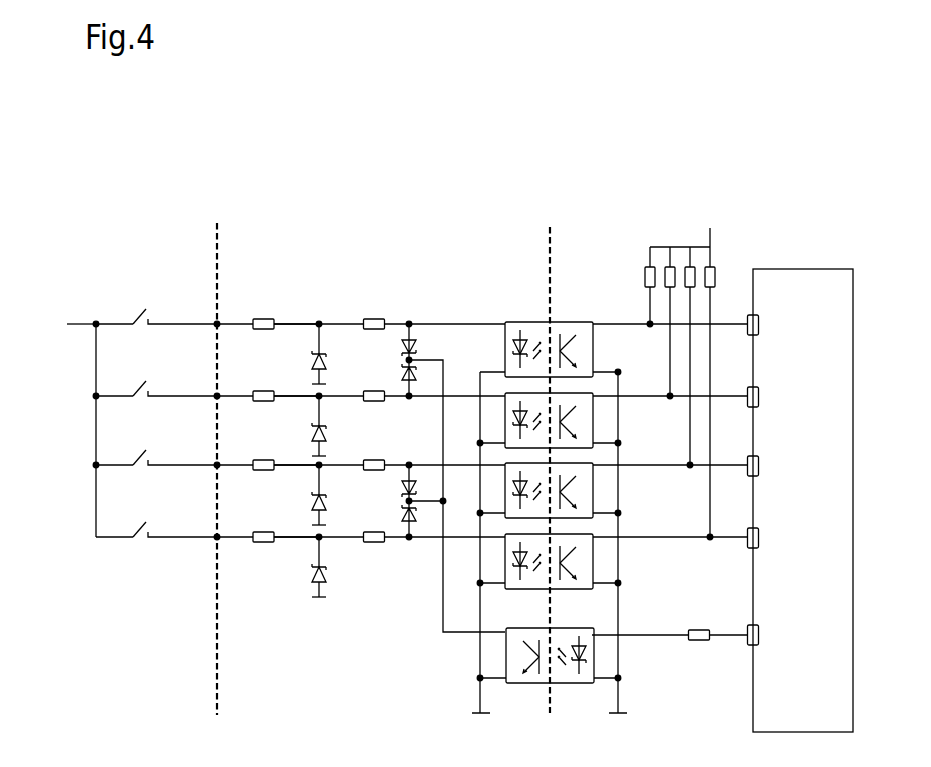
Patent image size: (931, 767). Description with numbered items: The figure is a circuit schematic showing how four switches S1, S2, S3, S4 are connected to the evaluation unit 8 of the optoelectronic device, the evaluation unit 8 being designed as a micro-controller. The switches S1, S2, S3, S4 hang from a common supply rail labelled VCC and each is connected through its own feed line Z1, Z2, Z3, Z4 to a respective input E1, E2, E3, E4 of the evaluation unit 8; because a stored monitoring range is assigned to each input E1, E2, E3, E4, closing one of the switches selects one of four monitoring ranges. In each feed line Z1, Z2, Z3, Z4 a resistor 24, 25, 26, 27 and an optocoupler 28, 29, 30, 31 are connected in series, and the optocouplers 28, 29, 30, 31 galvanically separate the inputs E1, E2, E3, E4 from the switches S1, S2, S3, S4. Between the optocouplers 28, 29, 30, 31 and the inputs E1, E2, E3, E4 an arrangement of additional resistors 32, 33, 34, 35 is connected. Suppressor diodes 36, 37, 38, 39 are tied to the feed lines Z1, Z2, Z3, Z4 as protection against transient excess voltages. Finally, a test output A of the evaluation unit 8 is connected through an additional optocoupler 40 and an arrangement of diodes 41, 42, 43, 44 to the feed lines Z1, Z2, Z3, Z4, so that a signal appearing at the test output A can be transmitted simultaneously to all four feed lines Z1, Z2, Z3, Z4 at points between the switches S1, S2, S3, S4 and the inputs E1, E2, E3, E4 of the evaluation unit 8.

The evaluation unit 8 is at (773, 288).
The resistor 24 is at (263, 322).
The resistor 25 is at (263, 394).
The resistor 26 is at (263, 463).
The resistor 27 is at (260, 535).
The optocoupler 28 is at (583, 328).
The optocoupler 29 is at (583, 425).
The optocoupler 30 is at (580, 490).
The optocoupler 31 is at (577, 558).
The additional resistor 32 is at (648, 266).
The additional resistor 33 is at (670, 266).
The additional resistor 34 is at (690, 266).
The additional resistor 35 is at (708, 266).
The suppressor diode 36 is at (325, 355).
The suppressor diode 37 is at (325, 427).
The suppressor diode 38 is at (325, 496).
The suppressor diode 39 is at (325, 567).
The additional optocoupler 40 is at (587, 641).
The diode 41 is at (416, 348).
The diode 42 is at (416, 376).
The diode 43 is at (416, 489).
The diode 44 is at (416, 517).
The switch S1 is at (140, 326).
The switch S2 is at (140, 398).
The switch S3 is at (140, 467).
The switch S4 is at (140, 539).
The feed line Z1 is at (298, 323).
The feed line Z2 is at (292, 395).
The feed line Z3 is at (292, 464).
The feed line Z4 is at (292, 540).
The input E1 is at (757, 337).
The input E2 is at (757, 410).
The input E3 is at (757, 480).
The input E4 is at (757, 552).
The test output A is at (755, 648).
The supply voltage VCC is at (60, 324).